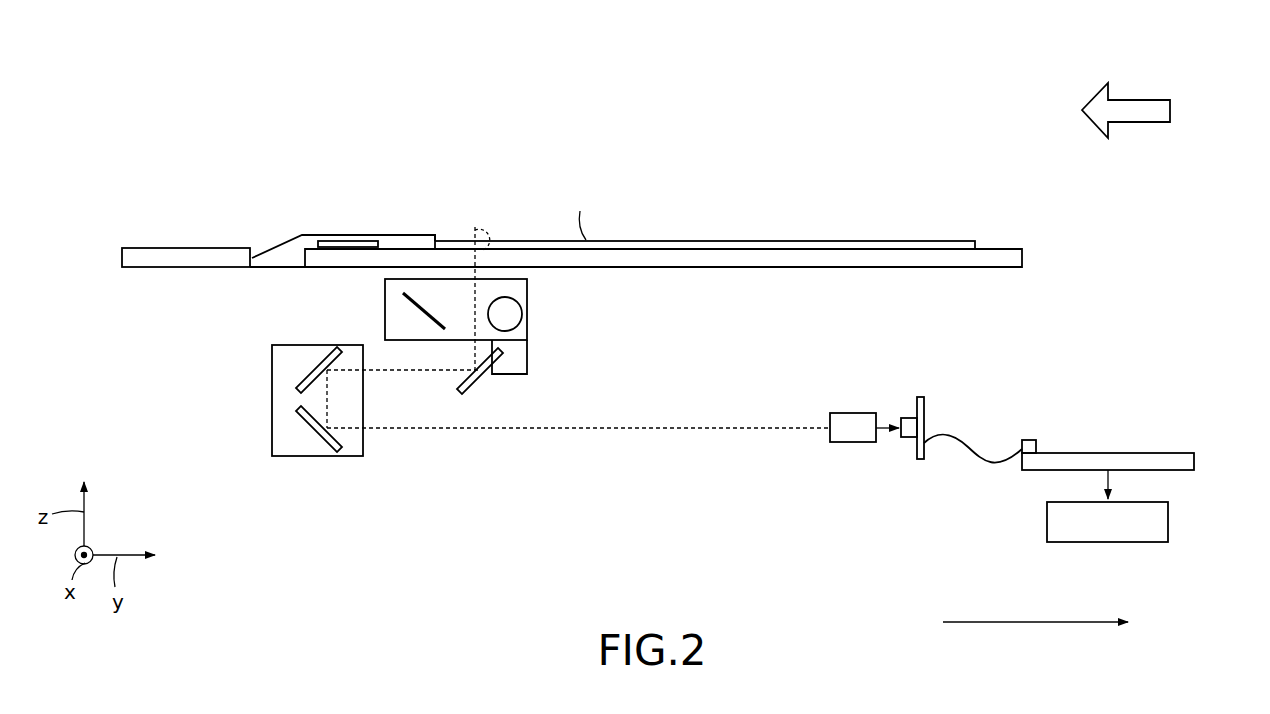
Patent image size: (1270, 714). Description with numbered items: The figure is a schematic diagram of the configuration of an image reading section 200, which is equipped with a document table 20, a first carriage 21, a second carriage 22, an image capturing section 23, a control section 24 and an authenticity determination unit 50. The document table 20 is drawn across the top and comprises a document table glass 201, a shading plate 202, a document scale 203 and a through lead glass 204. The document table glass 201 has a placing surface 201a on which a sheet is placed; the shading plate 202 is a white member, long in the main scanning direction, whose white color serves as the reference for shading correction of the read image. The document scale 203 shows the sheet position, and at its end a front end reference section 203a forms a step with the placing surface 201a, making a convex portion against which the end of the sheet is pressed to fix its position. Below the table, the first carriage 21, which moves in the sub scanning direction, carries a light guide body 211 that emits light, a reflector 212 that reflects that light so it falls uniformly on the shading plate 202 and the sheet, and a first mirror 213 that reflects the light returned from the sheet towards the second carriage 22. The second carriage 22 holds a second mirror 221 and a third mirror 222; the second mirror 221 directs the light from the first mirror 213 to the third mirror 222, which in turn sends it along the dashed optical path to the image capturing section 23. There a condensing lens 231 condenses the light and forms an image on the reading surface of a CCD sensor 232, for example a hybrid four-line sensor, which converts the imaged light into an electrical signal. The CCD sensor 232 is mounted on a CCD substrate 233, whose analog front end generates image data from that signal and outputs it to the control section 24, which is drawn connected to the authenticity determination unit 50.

The image reading section 200 is at (960, 124).
The document table 20 is at (690, 194).
The document table glass 201 is at (692, 267).
The placing surface 201a is at (778, 247).
The shading plate 202 is at (350, 240).
The document scale 203 is at (272, 232).
The front end reference section 203a is at (438, 233).
The through lead glass 204 is at (185, 258).
The first carriage 21 is at (528, 355).
The light guide body 211 is at (522, 298).
The reflector 212 is at (407, 303).
The first mirror 213 is at (478, 382).
The second carriage 22 is at (270, 459).
The second mirror 221 is at (313, 368).
The third mirror 222 is at (313, 432).
The image capturing section 23 is at (940, 353).
The condensing lens 231 is at (843, 422).
The CCD sensor 232 is at (907, 418).
The CCD substrate 233 is at (917, 456).
The control section 24 is at (1112, 462).
The authenticity determination unit 50 is at (1168, 518).